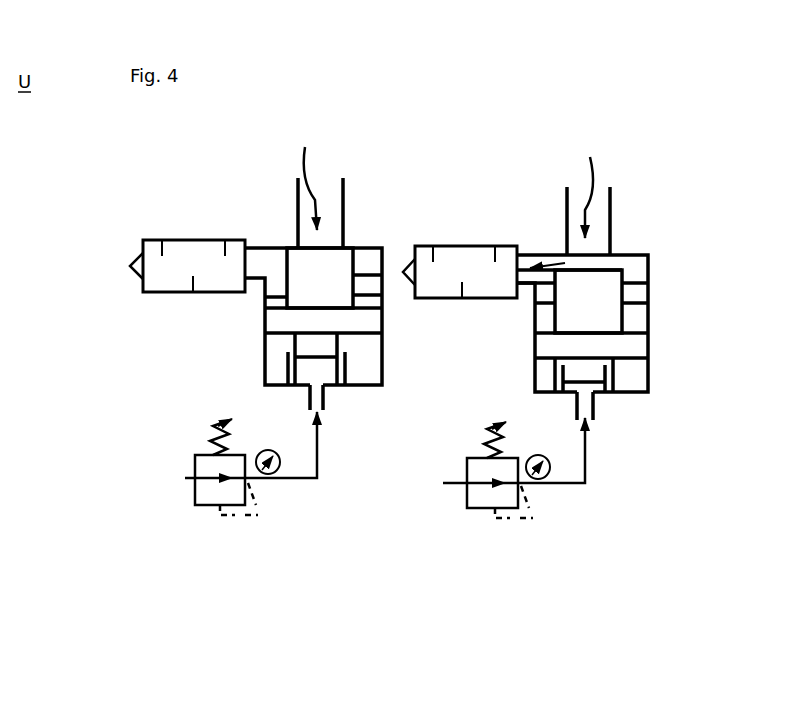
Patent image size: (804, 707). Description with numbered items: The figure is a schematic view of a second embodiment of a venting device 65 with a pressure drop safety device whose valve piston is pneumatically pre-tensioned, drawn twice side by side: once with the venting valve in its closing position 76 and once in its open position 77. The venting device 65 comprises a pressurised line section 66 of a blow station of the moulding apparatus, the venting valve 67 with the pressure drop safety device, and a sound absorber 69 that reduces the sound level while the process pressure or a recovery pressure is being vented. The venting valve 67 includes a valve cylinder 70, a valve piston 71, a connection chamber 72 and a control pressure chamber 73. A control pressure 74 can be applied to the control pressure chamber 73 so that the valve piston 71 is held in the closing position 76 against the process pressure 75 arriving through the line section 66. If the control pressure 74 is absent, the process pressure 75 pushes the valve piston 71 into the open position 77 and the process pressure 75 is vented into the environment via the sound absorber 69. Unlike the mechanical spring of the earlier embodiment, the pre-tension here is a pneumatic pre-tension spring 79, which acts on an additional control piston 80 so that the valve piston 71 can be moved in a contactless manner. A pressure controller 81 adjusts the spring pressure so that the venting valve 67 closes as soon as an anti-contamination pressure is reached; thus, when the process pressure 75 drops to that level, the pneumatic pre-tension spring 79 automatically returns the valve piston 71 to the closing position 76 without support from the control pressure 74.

The venting device 65 is at (419, 366).
The pressurised line section 66 is at (345, 197).
The venting valve 67 is at (267, 210).
The sound absorber 69 is at (172, 240).
The valve cylinder 70 is at (258, 335).
The valve piston 71 is at (454, 290).
The connection chamber 72 is at (367, 263).
The control pressure chamber 73 is at (368, 357).
The control pressure 74 is at (368, 378).
The process pressure 75 is at (447, 178).
The closing position 76 is at (361, 118).
The open position 77 is at (659, 158).
The pneumatic pre-tension spring 79 is at (245, 388).
The control piston 80 is at (322, 345).
The pressure controller 81 is at (258, 535).